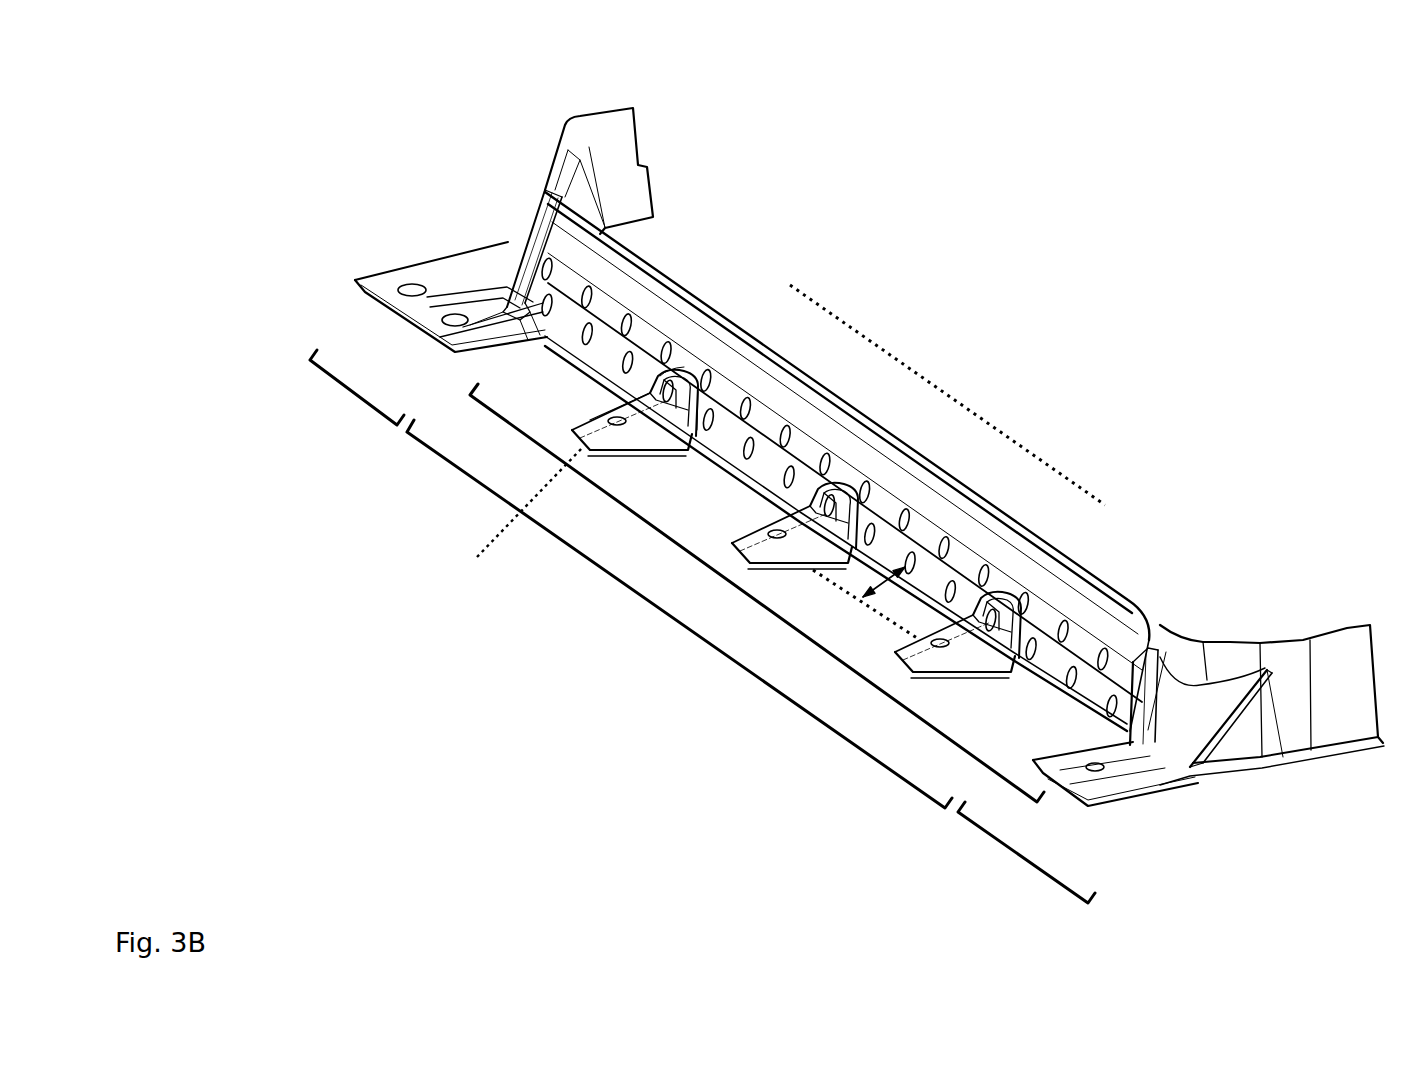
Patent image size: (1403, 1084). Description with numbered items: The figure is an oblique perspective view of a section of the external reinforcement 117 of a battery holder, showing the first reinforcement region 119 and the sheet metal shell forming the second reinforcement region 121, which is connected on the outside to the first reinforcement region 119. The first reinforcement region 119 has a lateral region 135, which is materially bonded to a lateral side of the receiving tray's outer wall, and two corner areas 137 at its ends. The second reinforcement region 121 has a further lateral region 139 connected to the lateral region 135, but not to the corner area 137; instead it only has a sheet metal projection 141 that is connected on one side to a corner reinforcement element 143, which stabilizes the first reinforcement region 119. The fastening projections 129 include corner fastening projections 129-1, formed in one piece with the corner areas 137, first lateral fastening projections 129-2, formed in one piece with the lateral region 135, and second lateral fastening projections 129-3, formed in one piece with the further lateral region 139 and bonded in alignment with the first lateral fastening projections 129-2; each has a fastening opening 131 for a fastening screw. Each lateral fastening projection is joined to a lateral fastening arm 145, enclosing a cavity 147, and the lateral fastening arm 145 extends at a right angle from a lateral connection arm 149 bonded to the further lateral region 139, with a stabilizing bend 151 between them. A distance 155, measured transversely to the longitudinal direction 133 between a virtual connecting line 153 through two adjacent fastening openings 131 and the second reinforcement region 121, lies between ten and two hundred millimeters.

The external reinforcement 117 is at (283, 140).
The first reinforcement region 119 is at (697, 303).
The second reinforcement region 121 is at (623, 342).
The fastening projections 129 is at (443, 275).
The corner fastening projections 129-1 is at (1167, 803).
The first lateral fastening projections 129-2 is at (683, 362).
The second lateral fastening projections 129-3 is at (973, 653).
The fastening opening 131 is at (1098, 769).
The longitudinal direction 133 is at (955, 400).
The lateral region 135 is at (668, 630).
The corner areas 137 is at (348, 400).
The further lateral region 139 is at (748, 605).
The sheet metal projection 141 is at (1160, 663).
The corner reinforcement element 143 is at (1207, 710).
The lateral fastening arm 145 is at (628, 415).
The cavity 147 is at (503, 516).
The lateral connection arm 149 is at (685, 375).
The bend 151 is at (700, 430).
The virtual connecting line 153 is at (847, 590).
The distance 155 is at (906, 599).